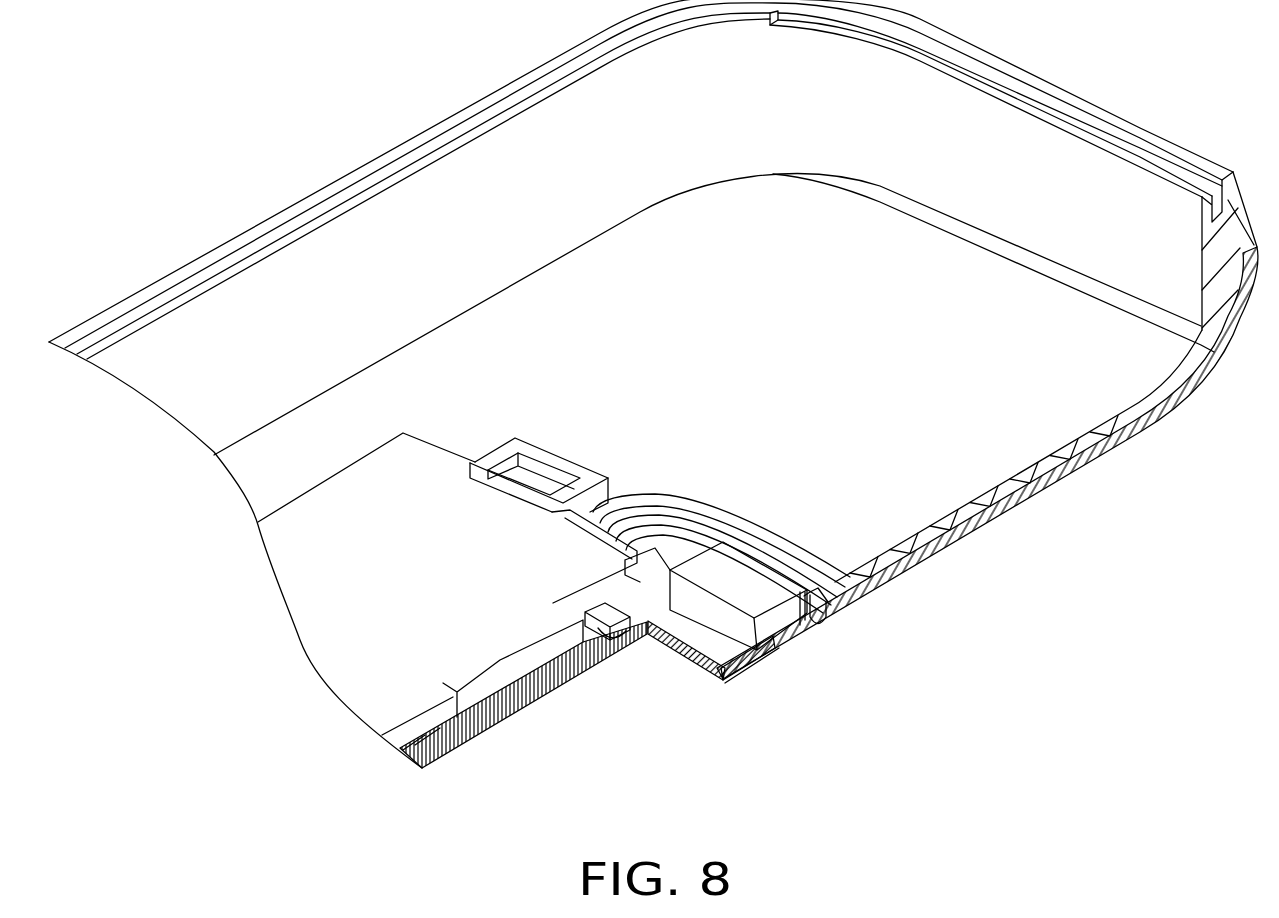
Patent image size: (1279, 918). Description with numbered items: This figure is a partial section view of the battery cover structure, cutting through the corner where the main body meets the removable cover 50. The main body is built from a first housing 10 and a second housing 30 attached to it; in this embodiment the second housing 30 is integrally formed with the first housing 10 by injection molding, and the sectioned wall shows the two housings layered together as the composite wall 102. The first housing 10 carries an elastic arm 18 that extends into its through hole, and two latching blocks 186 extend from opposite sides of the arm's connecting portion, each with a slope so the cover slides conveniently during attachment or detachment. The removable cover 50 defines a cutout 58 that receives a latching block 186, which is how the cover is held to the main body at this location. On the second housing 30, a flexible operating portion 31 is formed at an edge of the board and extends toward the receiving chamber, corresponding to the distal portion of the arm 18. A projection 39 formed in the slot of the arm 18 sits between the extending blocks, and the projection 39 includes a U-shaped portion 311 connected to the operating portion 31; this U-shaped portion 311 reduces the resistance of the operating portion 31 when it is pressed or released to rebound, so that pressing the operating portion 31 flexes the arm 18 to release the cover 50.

The first housing 10 is at (1068, 453).
The second housing 30 is at (1178, 393).
The side wall 102 is at (1215, 527).
The U-shaped portion 311 is at (828, 615).
The operating portion 31 is at (820, 623).
The elastic arm 18 is at (802, 595).
The projection 39 is at (767, 653).
The latching block 186 is at (643, 637).
The cutout 58 is at (622, 645).
The removable cover 50 is at (557, 686).